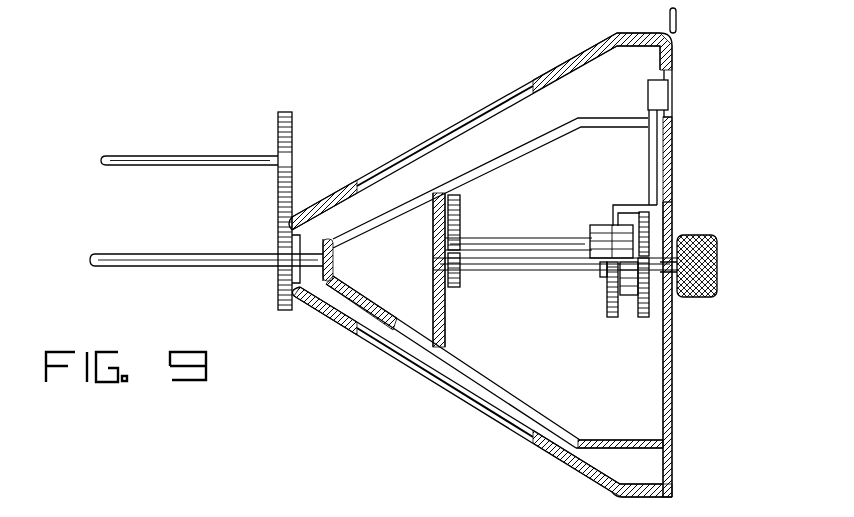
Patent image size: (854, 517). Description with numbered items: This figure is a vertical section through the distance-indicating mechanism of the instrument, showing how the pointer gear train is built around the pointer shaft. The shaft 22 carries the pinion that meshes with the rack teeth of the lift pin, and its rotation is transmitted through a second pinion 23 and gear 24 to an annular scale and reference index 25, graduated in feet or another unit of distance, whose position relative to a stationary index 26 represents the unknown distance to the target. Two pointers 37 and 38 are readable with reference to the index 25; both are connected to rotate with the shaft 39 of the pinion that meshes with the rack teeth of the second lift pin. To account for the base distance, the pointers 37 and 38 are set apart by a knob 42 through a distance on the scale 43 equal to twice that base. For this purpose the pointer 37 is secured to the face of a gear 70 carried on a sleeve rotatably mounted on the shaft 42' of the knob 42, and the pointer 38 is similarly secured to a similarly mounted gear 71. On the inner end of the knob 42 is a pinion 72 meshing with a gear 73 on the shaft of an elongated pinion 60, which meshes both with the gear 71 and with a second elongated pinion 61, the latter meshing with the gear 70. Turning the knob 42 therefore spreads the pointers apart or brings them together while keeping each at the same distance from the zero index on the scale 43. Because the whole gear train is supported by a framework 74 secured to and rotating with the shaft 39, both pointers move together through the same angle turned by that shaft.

The shaft 22 is at (148, 158).
The second pinion 23 is at (293, 133).
The gear 24 is at (280, 233).
The annular scale and reference index 25 is at (673, 60).
The stationary index 26 is at (680, 14).
The pointer 37 is at (658, 96).
The pointer 38 is at (628, 200).
The shaft 39 is at (162, 256).
The knob 42 is at (701, 250).
The shaft of knob 42' is at (555, 289).
The scale 43 is at (673, 127).
The elongated pinion 60 is at (593, 225).
The second elongated pinion 61 is at (640, 317).
The gear 70 is at (648, 220).
The gear 71 is at (610, 313).
The pinion 72 is at (460, 280).
The gear 73 is at (458, 200).
The framework 74 is at (670, 358).